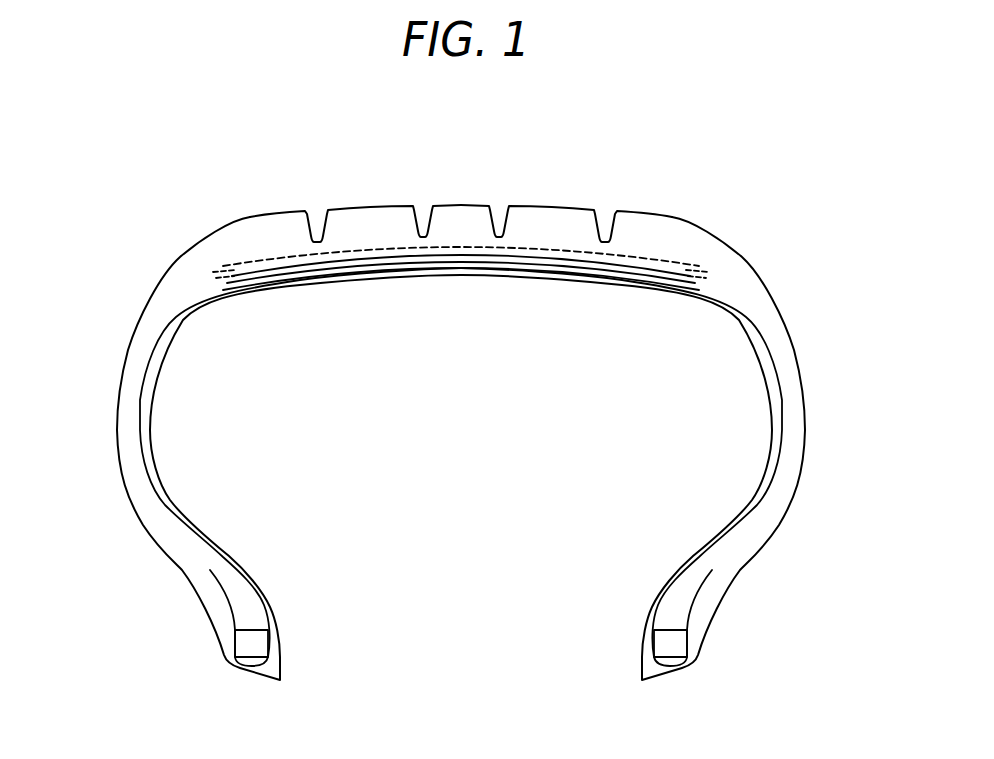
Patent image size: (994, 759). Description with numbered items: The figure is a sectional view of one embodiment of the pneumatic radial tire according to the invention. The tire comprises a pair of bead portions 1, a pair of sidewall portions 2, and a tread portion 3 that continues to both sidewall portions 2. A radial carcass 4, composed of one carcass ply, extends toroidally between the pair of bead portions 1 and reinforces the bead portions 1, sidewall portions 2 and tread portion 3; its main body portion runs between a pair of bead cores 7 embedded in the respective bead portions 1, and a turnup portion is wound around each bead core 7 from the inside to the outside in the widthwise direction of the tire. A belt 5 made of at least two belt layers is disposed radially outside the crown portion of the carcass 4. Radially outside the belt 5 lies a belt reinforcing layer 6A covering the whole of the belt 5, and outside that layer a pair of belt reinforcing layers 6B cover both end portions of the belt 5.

The bead portion 1 is at (464, 387).
The sidewall portion 2 is at (118, 421).
The tread portion 3 is at (548, 205).
The radial carcass 4 is at (147, 387).
The belt 5 is at (378, 252).
The belt reinforcing layer 6A is at (647, 260).
The belt reinforcing layer 6B is at (227, 268).
The bead core 7 is at (250, 643).